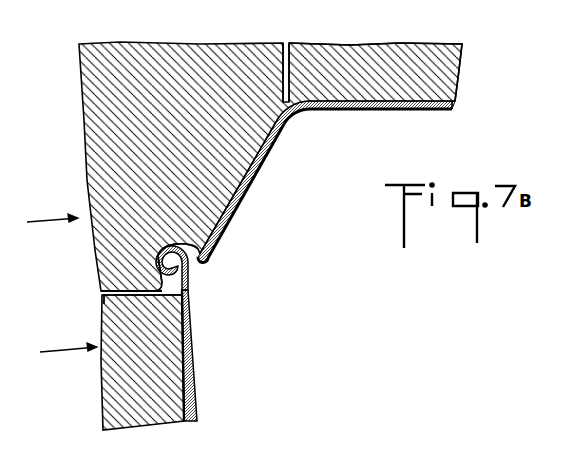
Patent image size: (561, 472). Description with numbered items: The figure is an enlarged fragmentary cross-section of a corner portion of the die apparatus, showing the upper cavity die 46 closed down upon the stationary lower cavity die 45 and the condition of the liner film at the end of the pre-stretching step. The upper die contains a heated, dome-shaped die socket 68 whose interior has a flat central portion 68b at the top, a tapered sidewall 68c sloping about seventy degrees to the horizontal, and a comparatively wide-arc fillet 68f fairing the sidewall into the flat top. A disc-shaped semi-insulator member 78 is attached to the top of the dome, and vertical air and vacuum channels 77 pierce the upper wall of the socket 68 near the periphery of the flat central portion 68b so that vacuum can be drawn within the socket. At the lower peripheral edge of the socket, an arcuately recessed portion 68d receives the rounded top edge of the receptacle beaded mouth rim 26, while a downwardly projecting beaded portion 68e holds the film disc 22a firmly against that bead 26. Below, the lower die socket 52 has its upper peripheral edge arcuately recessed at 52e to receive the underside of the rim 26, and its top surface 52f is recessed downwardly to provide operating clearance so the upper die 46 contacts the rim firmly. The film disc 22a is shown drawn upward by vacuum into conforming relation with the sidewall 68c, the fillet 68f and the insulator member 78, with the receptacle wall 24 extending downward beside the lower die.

The die socket 68 is at (200, 152).
The air and vacuum channels 77 is at (284, 50).
The semi-insulator member 78 is at (359, 101).
The flat central portion 68b is at (417, 87).
The fillet 68f is at (274, 127).
The tapered sidewall 68c is at (249, 197).
The film disc 22a is at (231, 217).
The beaded portion 68e is at (211, 255).
The arcuately recessed portion 68d is at (174, 249).
The receptacle beaded mouth rim 26 is at (156, 263).
The strip 24 is at (193, 349).
The die socket 52 is at (117, 373).
The upper peripheral edge 52e is at (190, 299).
The die socket top surface 52f is at (103, 297).
The upper cavity die 46 is at (48, 205).
The lower cavity die 45 is at (57, 340).